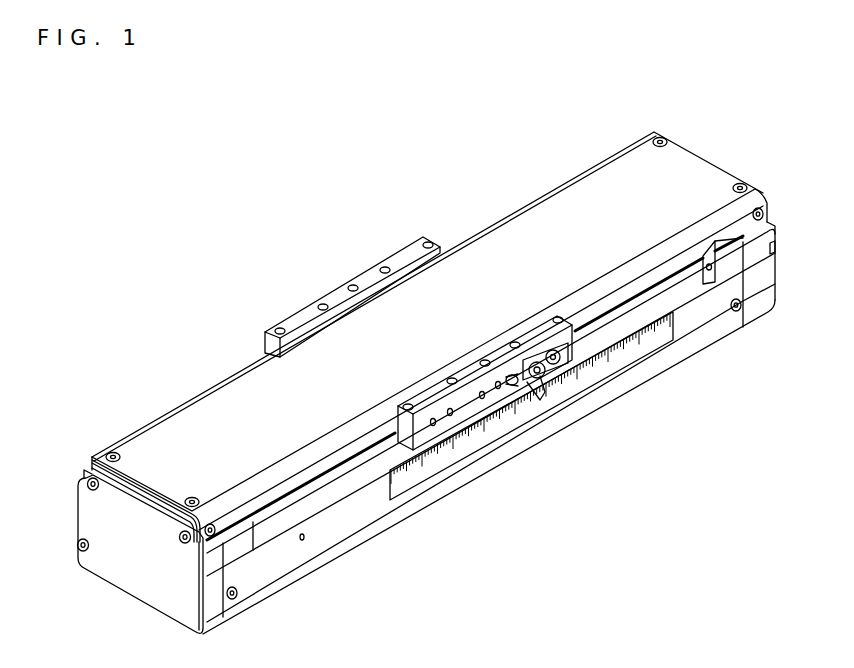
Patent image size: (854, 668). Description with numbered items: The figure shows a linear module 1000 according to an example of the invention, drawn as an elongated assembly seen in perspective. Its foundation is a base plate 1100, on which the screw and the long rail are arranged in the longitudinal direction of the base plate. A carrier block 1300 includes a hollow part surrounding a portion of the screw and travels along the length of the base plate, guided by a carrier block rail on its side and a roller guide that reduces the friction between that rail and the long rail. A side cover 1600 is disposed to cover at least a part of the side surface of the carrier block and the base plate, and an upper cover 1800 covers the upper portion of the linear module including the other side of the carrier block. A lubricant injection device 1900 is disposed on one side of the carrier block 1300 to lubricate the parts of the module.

The linear actuator 1000 is at (546, 131).
The base plate 1100 is at (697, 322).
The carrier block 1300 is at (365, 283).
The side cover 1600 is at (338, 527).
The top cover 1800 is at (688, 165).
The lubricant injection device 1900 is at (527, 388).